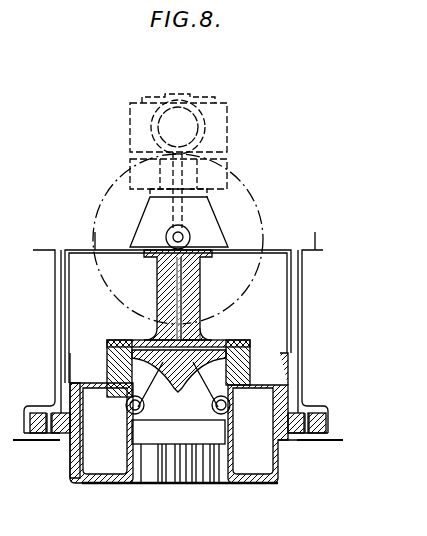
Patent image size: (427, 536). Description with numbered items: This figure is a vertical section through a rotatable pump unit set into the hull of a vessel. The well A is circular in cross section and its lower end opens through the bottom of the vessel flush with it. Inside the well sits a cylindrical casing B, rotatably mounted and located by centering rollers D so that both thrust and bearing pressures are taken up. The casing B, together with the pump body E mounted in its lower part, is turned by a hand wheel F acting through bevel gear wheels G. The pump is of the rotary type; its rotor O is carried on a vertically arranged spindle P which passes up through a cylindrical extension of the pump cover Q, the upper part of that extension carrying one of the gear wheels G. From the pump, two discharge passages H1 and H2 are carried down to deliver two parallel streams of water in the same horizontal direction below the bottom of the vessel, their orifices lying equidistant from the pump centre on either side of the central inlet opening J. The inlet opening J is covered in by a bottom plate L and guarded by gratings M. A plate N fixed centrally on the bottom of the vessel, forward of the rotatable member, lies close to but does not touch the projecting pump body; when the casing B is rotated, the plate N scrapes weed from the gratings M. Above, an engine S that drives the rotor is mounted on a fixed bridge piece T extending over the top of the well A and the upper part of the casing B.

The engine S is at (229, 127).
The hand wheel F is at (261, 186).
The fixed base or bridge piece T is at (140, 213).
The bevel gear wheels G is at (199, 246).
The spindle P is at (175, 277).
The pump cover Q is at (195, 291).
The cylindrical casing B is at (67, 298).
The well A is at (62, 328).
The centering rollers D is at (317, 433).
The rotor O is at (138, 368).
The pump body E is at (75, 389).
The discharge passage H2 is at (95, 453).
The discharge passage H1 is at (263, 458).
The inlet opening J is at (157, 435).
The gratings M is at (152, 462).
The plate N is at (183, 465).
The bottom plate L is at (90, 485).